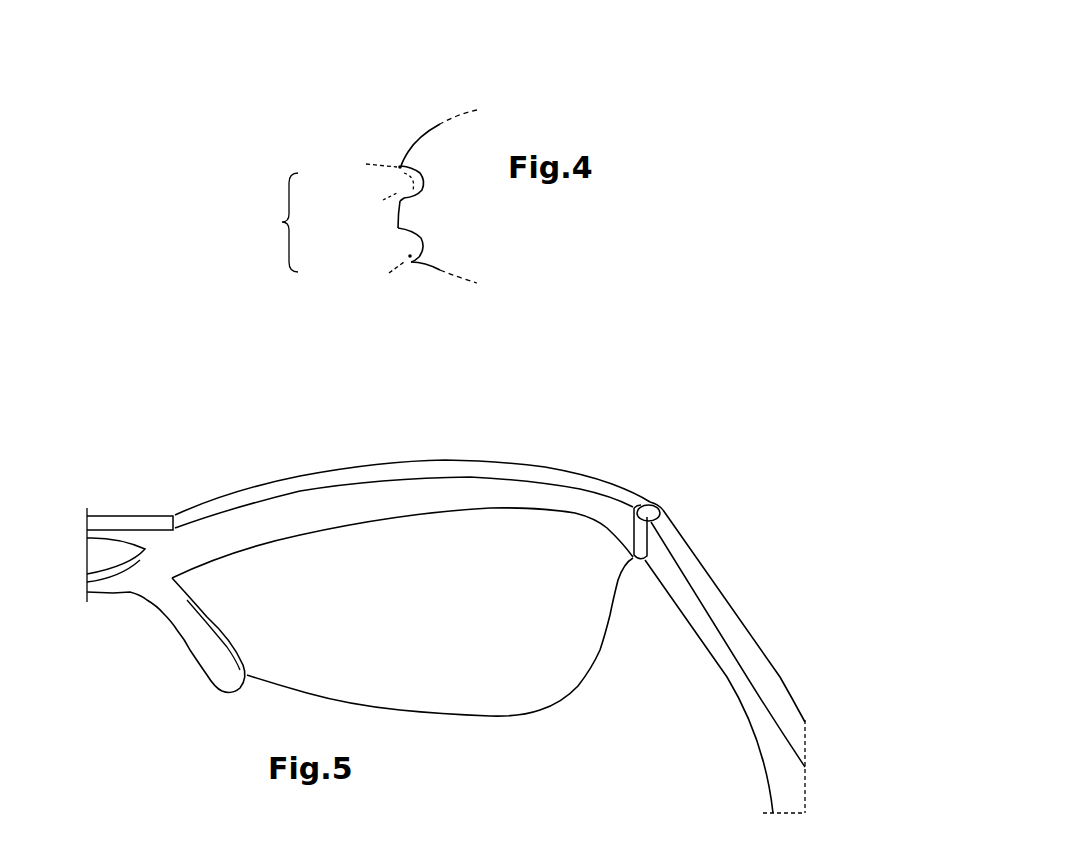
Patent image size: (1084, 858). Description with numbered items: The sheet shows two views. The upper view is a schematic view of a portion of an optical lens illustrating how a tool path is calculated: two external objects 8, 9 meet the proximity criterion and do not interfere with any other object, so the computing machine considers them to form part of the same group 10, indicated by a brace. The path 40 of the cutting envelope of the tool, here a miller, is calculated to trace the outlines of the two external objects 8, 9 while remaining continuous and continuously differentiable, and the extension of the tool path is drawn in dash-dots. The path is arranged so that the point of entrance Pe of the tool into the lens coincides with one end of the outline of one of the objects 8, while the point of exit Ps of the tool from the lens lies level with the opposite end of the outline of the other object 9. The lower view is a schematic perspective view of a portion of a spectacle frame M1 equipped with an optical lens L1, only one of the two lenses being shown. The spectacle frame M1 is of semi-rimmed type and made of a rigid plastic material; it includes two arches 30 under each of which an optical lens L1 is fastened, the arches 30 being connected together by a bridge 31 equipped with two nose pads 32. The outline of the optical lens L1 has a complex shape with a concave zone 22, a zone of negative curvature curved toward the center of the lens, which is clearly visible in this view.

In FIG. 4, the point of entrance Pe is at (400, 165).
In FIG. 4, the external object 8 is at (400, 174).
In FIG. 4, the path 40 is at (398, 230).
In FIG. 4, the external object 9 is at (405, 236).
In FIG. 4, the group 10 is at (270, 222).
In FIG. 4, the point of exit Ps is at (410, 258).
In FIG. 5, the bridge 31 is at (120, 515).
In FIG. 5, the arch 30 is at (373, 473).
In FIG. 5, the spectacle frame M1 is at (583, 469).
In FIG. 5, the concave zone 22 is at (636, 562).
In FIG. 5, the nose pad 32 is at (207, 642).
In FIG. 5, the optical lens L1 is at (518, 716).